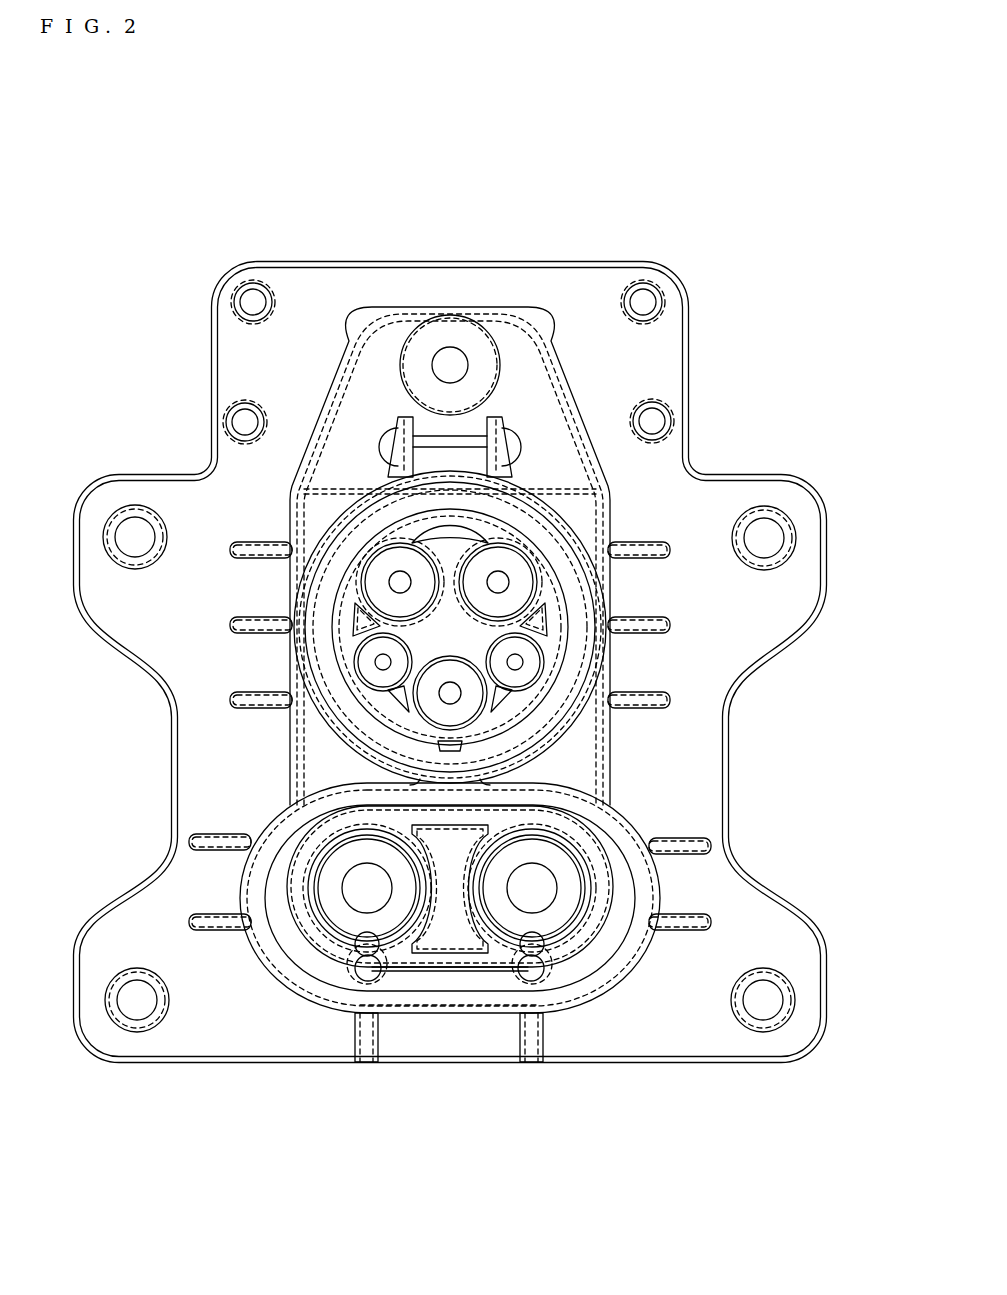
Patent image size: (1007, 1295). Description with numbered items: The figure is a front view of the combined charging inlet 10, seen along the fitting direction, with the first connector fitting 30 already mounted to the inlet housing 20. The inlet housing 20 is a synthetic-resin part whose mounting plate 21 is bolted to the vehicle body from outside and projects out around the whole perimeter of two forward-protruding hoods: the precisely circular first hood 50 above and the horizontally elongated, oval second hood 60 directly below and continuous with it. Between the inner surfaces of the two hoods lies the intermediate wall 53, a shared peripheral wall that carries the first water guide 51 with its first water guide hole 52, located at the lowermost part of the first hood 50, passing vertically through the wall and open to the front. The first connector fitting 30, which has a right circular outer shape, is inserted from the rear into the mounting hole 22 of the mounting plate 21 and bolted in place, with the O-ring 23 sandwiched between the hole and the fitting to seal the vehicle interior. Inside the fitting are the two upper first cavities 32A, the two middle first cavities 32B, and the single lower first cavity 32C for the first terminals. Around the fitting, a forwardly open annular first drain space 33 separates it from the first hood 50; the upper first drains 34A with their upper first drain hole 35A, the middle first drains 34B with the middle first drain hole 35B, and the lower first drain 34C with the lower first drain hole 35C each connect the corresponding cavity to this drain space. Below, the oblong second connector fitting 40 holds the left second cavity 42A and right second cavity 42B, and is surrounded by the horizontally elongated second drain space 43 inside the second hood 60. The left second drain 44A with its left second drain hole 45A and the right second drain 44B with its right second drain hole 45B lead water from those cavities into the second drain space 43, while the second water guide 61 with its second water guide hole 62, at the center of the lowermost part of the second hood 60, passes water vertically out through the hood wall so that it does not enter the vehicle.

The combined charging inlet 10 is at (439, 146).
The inlet housing 20 is at (398, 238).
The mounting plate 21 is at (551, 283).
The mounting hole 22 is at (465, 515).
The O-ring 23 is at (507, 530).
The first connector fitting 30 is at (447, 580).
The upper first cavities 32A is at (398, 582).
The middle first cavities 32B is at (383, 662).
The lower first cavity 32C is at (450, 693).
The first drain space 33 is at (573, 633).
The upper first drains 34A is at (348, 622).
The upper first drain hole 35A is at (443, 539).
The middle first drains 34B is at (398, 712).
The middle first drain hole 35B is at (447, 726).
The lower first drain 34C is at (457, 750).
The lower first drain hole 35C is at (635, 767).
The second connector fitting 40 is at (465, 963).
The left second cavity 42A is at (367, 888).
The right second cavity 42B is at (532, 888).
The second drain space 43 is at (617, 907).
The left second drain 44A is at (387, 953).
The left second drain hole 45A is at (332, 1038).
The right second drain 44B is at (530, 973).
The right second drain hole 45B is at (581, 1038).
The first hood 50 is at (587, 663).
The first water guide 51 is at (473, 777).
The first water guide hole 52 is at (615, 814).
The intermediate wall 53 is at (490, 773).
The second hood 60 is at (590, 983).
The second water guide 61 is at (472, 1000).
The second water guide hole 62 is at (449, 1055).